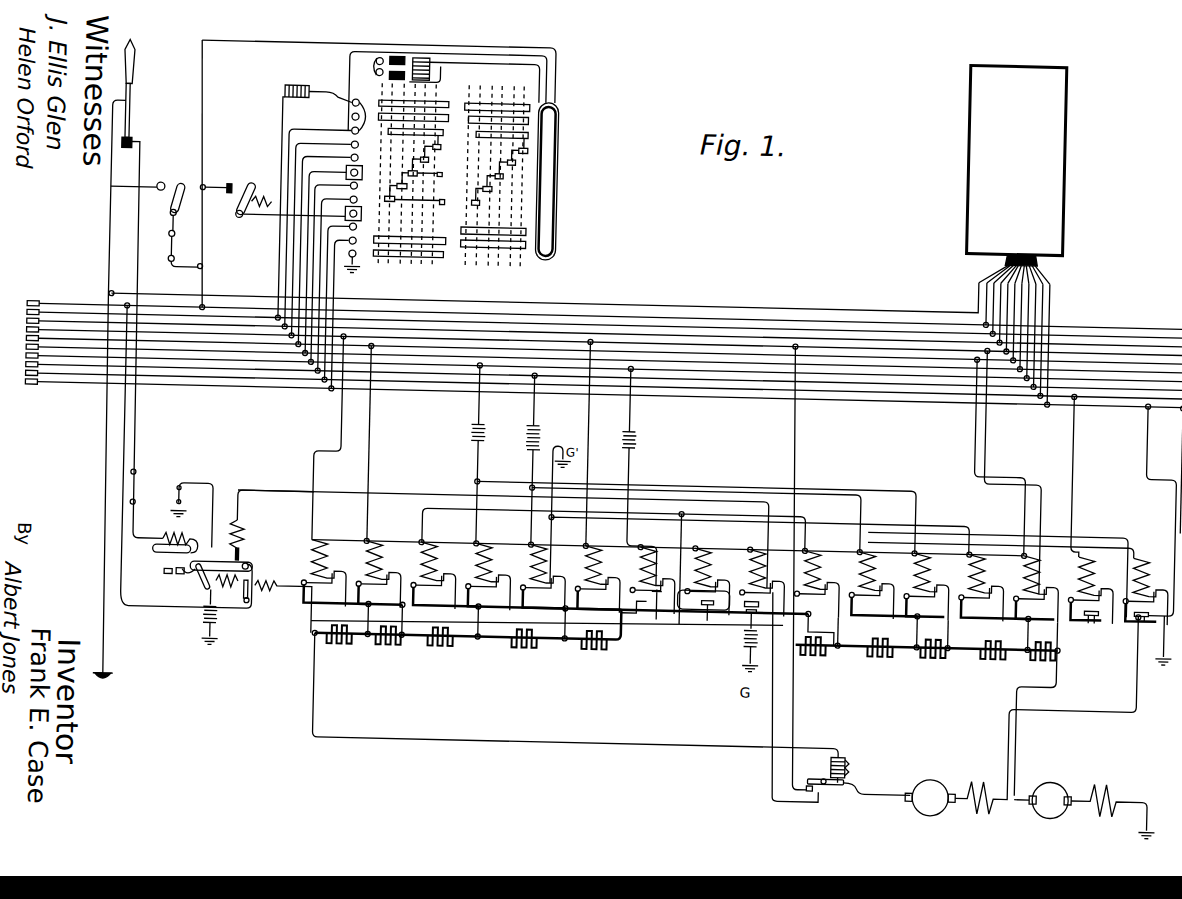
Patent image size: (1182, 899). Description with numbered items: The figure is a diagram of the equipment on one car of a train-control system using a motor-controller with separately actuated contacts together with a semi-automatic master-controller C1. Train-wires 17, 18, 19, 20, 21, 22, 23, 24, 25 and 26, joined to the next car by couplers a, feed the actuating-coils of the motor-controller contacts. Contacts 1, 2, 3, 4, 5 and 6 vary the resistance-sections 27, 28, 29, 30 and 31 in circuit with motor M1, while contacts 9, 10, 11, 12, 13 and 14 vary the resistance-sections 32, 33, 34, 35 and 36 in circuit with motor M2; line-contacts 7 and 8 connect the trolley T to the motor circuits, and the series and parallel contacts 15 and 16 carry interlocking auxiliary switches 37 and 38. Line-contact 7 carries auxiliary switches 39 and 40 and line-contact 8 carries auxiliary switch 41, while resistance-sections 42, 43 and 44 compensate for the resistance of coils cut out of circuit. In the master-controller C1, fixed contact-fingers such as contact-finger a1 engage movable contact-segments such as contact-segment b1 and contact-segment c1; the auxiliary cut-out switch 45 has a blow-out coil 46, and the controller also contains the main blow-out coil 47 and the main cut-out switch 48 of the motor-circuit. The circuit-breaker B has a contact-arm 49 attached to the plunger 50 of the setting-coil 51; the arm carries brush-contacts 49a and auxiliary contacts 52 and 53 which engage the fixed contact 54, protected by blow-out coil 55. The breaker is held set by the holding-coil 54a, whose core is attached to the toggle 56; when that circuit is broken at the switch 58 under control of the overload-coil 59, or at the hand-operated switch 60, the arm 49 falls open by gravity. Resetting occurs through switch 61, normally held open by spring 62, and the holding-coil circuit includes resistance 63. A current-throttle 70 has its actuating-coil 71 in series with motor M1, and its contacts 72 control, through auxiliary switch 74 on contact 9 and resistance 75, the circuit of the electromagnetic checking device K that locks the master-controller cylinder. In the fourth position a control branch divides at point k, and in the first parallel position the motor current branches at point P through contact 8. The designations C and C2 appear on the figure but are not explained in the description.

The motor-controller contact 1 is at (335, 562).
The motor-controller contact 2 is at (380, 564).
The motor-controller contact 3 is at (445, 565).
The motor-controller contact 4 is at (516, 566).
The motor-controller contact 5 is at (571, 567).
The motor-controller contact 6 is at (692, 571).
The line-contact 7 is at (653, 570).
The line-contact 8 is at (707, 571).
The motor-controller contact 9 is at (762, 579).
The motor-controller contact 10 is at (816, 588).
The motor-controller contact 11 is at (885, 589).
The motor-controller contact 12 is at (926, 590).
The motor-controller contact 13 is at (995, 591).
The motor-controller contact 14 is at (1034, 673).
The series contact 15 is at (1091, 580).
The parallel contact 16 is at (1146, 581).
The train-wire 17 is at (836, 396).
The train-wire 18 is at (846, 387).
The train-wire 19 is at (865, 378).
The train-wire 20 is at (880, 370).
The train-wire 21 is at (890, 361).
The train-wire 22 is at (905, 352).
The train-wire 23 is at (918, 344).
The train-wire 24 is at (931, 335).
The train-wire 25 is at (941, 326).
The train-wire 26 is at (948, 318).
The resistance-section 27 is at (339, 643).
The resistance-section 28 is at (388, 644).
The resistance-section 29 is at (440, 645).
The resistance-section 30 is at (524, 647).
The resistance-section 31 is at (594, 649).
The resistance-section 32 is at (813, 655).
The resistance-section 33 is at (880, 656).
The resistance-section 34 is at (933, 658).
The resistance-section 35 is at (993, 659).
The resistance-section 36 is at (1043, 660).
The auxiliary switch 37 is at (1095, 614).
The auxiliary switch 38 is at (1146, 612).
The auxiliary switch 39 is at (662, 622).
The auxiliary switch 40 is at (636, 618).
The auxiliary switch 41 is at (710, 620).
The resistance-section 42 is at (485, 432).
The resistance-section 43 is at (540, 432).
The resistance-section 44 is at (638, 436).
The auxiliary cut-out switch 45 is at (390, 58).
The blow-out coil 46 is at (421, 64).
The main blow-out coil 47 is at (556, 140).
The main cut-out switch 48 is at (126, 126).
The contact-arm 49 is at (252, 572).
The brush-contacts 49a is at (190, 586).
The core or plunger 50 is at (242, 560).
The circuit-breaker setting-coil 51 is at (243, 530).
The auxiliary contact 52 is at (180, 584).
The auxiliary contact 53 is at (166, 580).
The fixed contact 54 is at (156, 559).
The holding-coil 54a is at (230, 596).
The blow-out coil 55 is at (172, 540).
The toggle 56 is at (208, 600).
The switch 58 is at (251, 612).
The overload-coil 59 is at (272, 590).
The hand-operated switch 60 is at (176, 192).
The switch 61 is at (240, 190).
The spring 62 is at (258, 203).
The resistance 63 is at (206, 634).
The current throttle or relay 70 is at (825, 770).
The actuating-coil 71 is at (851, 756).
The throttle contacts 72 is at (826, 785).
The auxiliary switch 74 is at (760, 608).
The resistance 75 is at (750, 646).
The couplers a is at (44, 348).
The contact-finger a1 is at (353, 177).
The circuit-breaker B is at (275, 511).
The controller C is at (697, 472).
The master-controller C1 is at (451, 174).
The controller C2 is at (1039, 237).
The electromagnetically-actuated checking device K is at (290, 90).
The branching point k is at (683, 512).
The motor M1 is at (930, 784).
The motor M2 is at (1050, 787).
The branching point P is at (683, 625).
The trolley or collector-shoe T is at (114, 680).
The contact-segment b1 is at (419, 182).
The contact-segment c1 is at (501, 184).